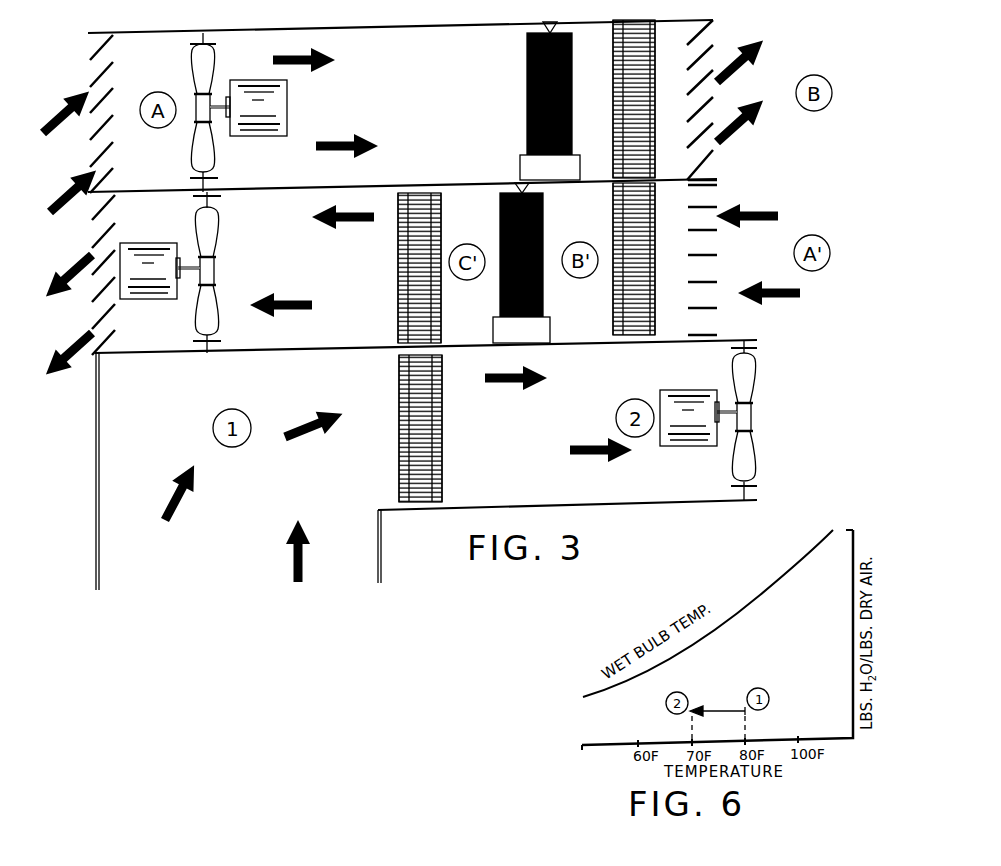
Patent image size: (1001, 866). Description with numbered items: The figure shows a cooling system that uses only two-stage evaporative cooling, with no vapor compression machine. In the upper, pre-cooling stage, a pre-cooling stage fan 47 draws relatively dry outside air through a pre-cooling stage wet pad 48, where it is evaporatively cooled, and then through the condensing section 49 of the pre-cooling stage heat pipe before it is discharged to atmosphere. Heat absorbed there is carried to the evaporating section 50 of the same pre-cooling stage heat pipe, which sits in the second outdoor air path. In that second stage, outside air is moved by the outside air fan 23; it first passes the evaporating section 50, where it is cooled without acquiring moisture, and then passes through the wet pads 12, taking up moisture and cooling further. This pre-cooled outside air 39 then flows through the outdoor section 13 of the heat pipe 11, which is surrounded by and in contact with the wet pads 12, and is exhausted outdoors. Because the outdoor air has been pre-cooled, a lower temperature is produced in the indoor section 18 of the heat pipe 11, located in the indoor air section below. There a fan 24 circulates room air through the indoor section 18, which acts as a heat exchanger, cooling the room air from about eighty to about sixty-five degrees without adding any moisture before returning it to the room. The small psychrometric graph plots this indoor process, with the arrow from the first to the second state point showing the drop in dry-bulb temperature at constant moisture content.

The heat pipe 11 is at (410, 323).
The wet pads 12 is at (540, 248).
The outdoor section of heat pipe 13 is at (420, 242).
The indoor section of heat pipe 18 is at (423, 468).
The outside air fan 23 is at (207, 229).
The fan 24 is at (747, 462).
The pre-cooled outside air 39 is at (56, 94).
The pre-cooling stage fan 47 is at (207, 66).
The pre-cooling stage wet pad 48 is at (527, 86).
The condensing section of pre-cooling stage heat pipe 49 is at (640, 67).
The evaporating section of pre-cooling stage heat pipe 50 is at (635, 277).